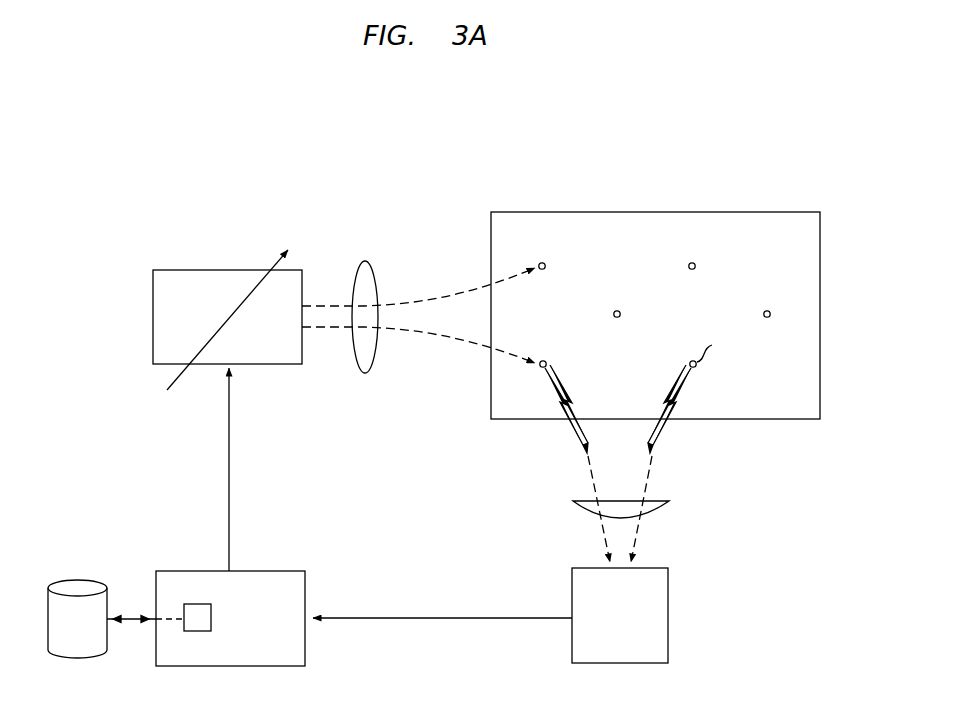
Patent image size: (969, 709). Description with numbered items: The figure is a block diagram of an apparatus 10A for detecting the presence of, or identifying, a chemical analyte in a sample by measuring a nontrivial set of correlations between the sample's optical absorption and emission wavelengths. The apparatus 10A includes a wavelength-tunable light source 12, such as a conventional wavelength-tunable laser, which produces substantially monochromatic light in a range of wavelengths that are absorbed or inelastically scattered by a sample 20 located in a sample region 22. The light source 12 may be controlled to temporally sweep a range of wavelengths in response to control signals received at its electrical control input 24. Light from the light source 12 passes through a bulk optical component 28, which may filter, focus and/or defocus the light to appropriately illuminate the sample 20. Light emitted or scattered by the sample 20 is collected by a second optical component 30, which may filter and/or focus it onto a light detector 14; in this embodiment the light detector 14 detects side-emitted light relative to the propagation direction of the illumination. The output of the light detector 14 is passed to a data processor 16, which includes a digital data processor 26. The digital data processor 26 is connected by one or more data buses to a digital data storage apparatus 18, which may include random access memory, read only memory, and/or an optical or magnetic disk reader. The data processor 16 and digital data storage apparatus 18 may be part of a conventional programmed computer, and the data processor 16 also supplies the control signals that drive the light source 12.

The apparatus 10A is at (292, 157).
The wavelength-tunable light source 12 is at (279, 346).
The light detector 14 is at (633, 629).
The data processor 16 is at (283, 647).
The digital data storage apparatus 18 is at (87, 637).
The sample 20 is at (636, 263).
The sample region 22 is at (820, 216).
The electrical control input 24 is at (231, 366).
The digital data processor 26 is at (211, 606).
The optical component 28 is at (371, 266).
The optical component 30 is at (580, 504).